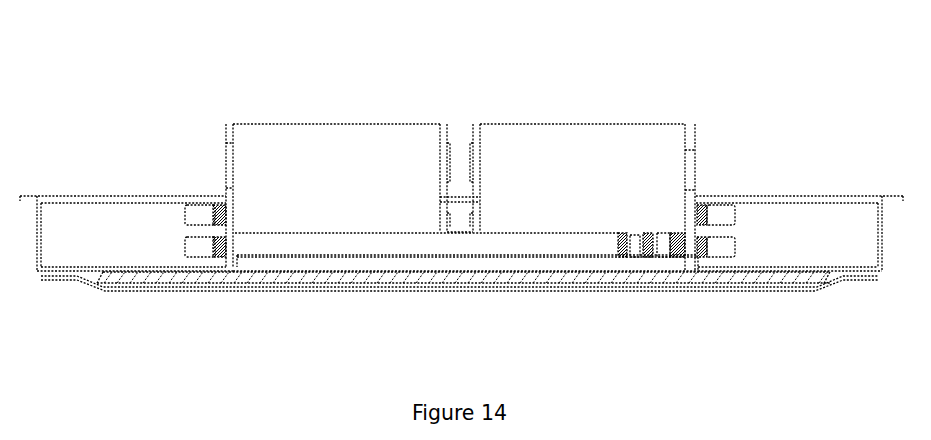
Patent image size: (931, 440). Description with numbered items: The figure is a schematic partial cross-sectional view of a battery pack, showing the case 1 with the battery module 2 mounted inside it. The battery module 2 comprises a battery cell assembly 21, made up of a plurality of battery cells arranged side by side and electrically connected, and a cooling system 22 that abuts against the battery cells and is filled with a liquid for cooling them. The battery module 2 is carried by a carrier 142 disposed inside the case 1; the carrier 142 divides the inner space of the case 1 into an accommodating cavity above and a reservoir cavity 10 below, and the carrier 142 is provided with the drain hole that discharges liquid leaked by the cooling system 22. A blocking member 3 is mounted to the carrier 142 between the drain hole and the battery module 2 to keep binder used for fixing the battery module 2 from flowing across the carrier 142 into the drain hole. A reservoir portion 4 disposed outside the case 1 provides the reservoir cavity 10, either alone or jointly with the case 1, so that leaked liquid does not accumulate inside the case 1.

The case 1 is at (40, 266).
The carrier 142 is at (128, 271).
The reservoir portion 4 is at (165, 287).
The reservoir cavity 10 is at (463, 317).
The blocking member 3 is at (365, 263).
The battery module 2 is at (462, 149).
The battery cell assembly 21 is at (348, 148).
The cooling system 22 is at (388, 245).